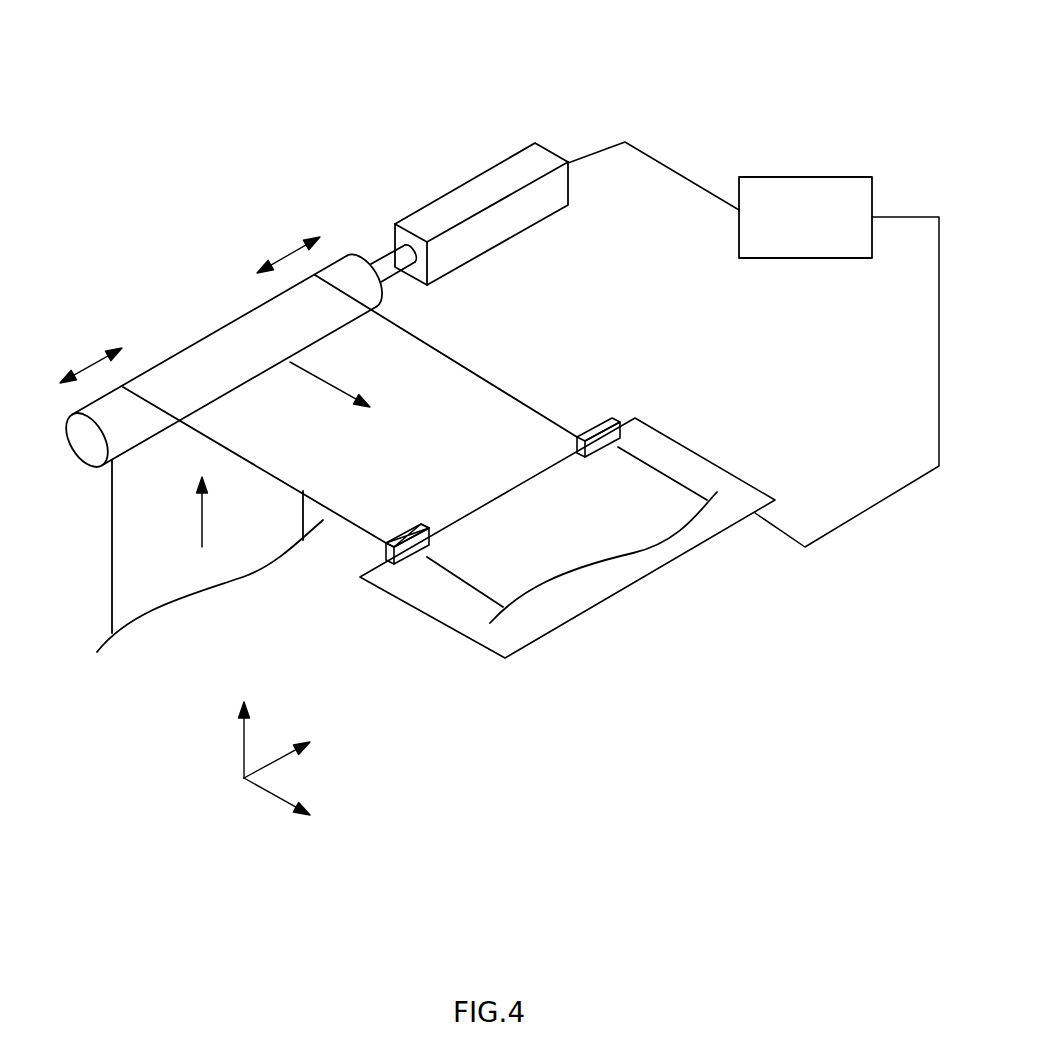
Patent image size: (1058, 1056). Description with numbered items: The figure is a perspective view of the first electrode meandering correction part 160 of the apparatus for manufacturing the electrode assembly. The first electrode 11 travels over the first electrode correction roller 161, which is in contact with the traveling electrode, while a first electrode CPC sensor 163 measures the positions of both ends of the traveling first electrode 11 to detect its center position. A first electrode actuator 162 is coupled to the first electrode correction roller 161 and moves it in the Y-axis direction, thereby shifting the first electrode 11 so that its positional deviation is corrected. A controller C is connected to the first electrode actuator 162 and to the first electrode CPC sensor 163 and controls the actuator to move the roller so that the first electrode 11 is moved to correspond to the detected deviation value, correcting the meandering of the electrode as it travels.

The first electrode meandering correction part 160 is at (435, 88).
The first electrode correction roller 161 is at (90, 455).
The first electrode actuator 162 is at (428, 213).
The first electrode CPC sensor 163 is at (418, 528).
The first electrode 11 is at (125, 572).
The controller C is at (803, 177).